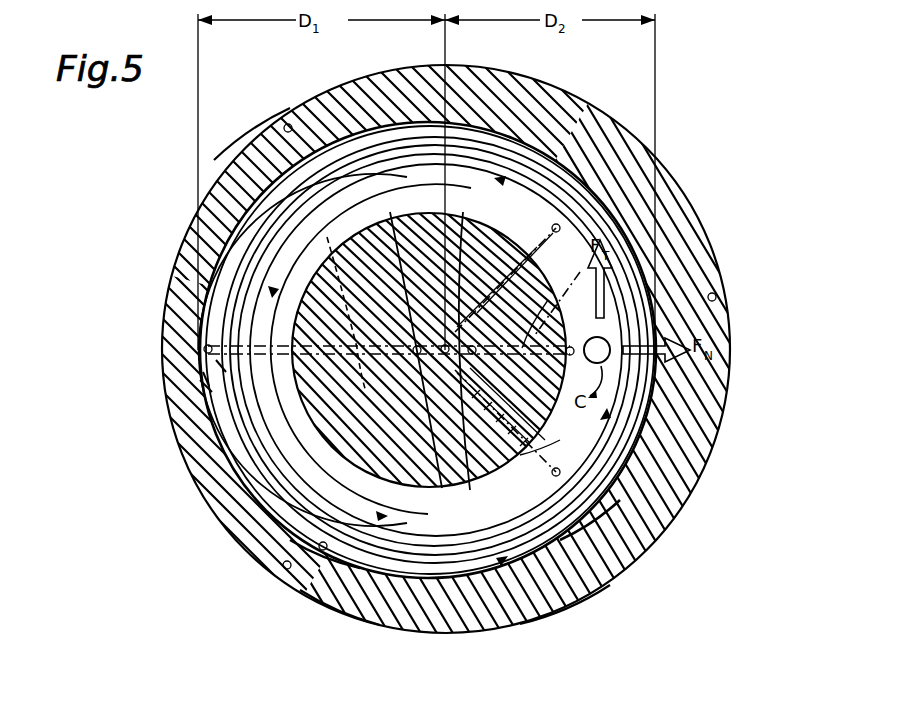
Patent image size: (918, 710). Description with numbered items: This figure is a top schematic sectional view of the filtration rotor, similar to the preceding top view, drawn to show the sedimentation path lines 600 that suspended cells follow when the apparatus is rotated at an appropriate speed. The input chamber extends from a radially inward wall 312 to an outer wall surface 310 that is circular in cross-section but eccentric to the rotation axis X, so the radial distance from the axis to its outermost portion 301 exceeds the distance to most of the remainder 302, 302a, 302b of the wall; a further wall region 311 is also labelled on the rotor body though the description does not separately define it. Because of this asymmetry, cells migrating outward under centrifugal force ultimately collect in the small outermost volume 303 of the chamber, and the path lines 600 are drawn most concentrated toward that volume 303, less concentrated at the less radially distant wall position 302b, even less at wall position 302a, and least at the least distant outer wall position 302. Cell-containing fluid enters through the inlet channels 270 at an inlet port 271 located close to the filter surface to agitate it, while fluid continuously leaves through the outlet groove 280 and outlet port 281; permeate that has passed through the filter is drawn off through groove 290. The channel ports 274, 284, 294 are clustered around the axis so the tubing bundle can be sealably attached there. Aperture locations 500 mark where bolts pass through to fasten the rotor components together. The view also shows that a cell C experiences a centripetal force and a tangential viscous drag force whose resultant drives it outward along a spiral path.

The inlet channel 270 is at (505, 352).
The inlet port 271 is at (560, 474).
The channel port 274 is at (458, 465).
The outlet groove 280 is at (338, 278).
The outlet port 281 is at (205, 380).
The channel port 284 is at (403, 232).
The groove 290 is at (554, 304).
The channel port 294 is at (530, 452).
The radially outermost portion of outer wall surface 301 is at (205, 385).
The remainder of outer wall surface 302 is at (657, 377).
The outer wall position 302a is at (630, 553).
The outer wall position 302b is at (320, 548).
The radially outermost volume of chamber 303 is at (220, 365).
The outer wall surface 310 is at (585, 597).
The housing outer surface 311 is at (340, 615).
The radially inward wall 312 is at (254, 154).
The aperture location 500 is at (716, 297).
The sedimentation path lines 600 is at (260, 478).